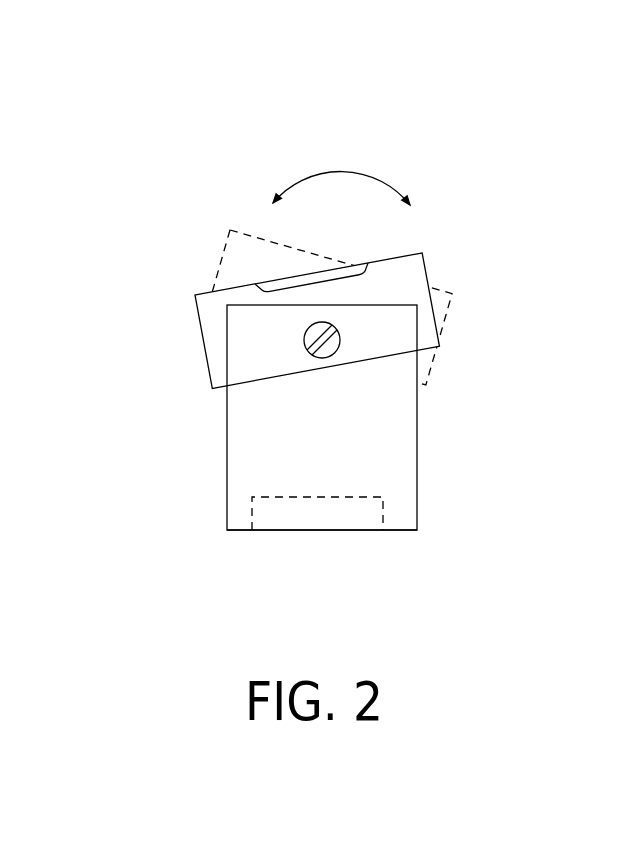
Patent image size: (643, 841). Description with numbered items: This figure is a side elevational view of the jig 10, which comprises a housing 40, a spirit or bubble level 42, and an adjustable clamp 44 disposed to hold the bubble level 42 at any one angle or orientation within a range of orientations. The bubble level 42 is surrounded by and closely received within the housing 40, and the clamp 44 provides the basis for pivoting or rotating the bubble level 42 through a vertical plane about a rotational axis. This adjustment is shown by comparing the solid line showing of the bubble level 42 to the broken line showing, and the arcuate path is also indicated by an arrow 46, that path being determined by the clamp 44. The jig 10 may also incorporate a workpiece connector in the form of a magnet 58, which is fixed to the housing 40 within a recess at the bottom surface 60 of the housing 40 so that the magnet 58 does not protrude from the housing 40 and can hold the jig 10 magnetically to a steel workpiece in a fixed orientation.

The jig 10 is at (207, 82).
The housing 40 is at (433, 457).
The bubble level 42 is at (440, 248).
The adjustable clamp 44 is at (303, 347).
The arrow 46 is at (350, 172).
The magnet 58 is at (322, 517).
The bottom surface 60 is at (240, 530).